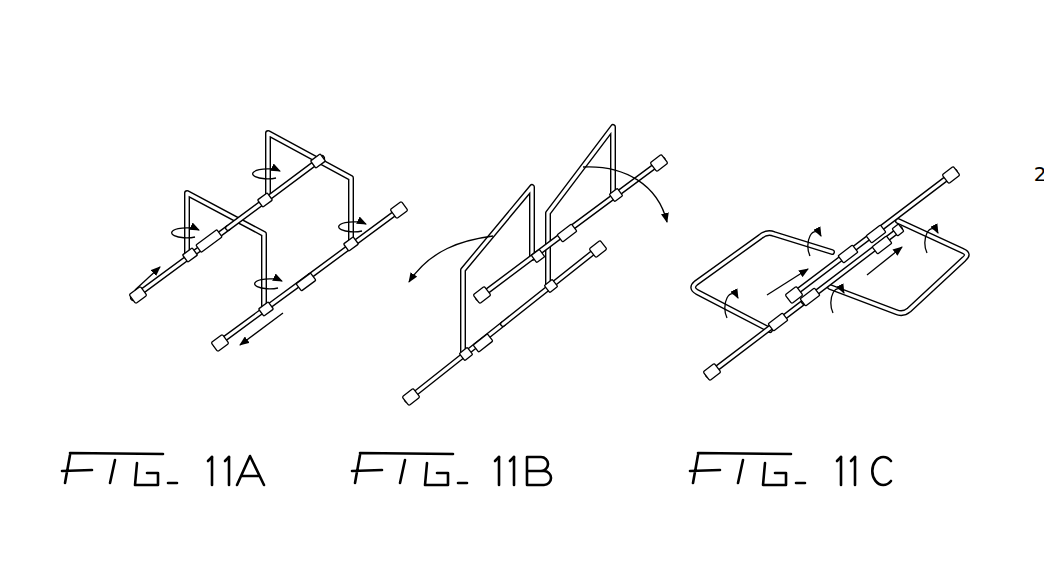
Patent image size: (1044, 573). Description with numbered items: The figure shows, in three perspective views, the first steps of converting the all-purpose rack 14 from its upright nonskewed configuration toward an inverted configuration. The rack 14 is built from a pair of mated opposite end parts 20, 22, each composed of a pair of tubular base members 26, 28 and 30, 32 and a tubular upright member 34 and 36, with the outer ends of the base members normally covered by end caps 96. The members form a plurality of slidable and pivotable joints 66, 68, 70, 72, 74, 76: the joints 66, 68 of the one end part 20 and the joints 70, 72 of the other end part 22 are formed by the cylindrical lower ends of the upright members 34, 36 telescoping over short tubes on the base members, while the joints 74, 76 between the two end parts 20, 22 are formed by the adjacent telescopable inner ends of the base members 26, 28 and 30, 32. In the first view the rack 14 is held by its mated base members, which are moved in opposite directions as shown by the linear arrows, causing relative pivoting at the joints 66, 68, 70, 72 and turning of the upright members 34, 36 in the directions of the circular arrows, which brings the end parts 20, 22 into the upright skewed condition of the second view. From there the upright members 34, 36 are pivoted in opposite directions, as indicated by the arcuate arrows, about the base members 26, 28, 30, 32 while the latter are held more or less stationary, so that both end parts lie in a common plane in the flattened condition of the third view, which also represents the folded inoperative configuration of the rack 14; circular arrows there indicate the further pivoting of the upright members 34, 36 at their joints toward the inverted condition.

In FIG. 11A, the all-purpose rack 14 is at (252, 231).
In FIG. 11B, the all-purpose rack 14 is at (564, 229).
In FIG. 11C, the all-purpose rack 14 is at (840, 239).
In FIG. 11A, the end part 20 is at (169, 227).
In FIG. 11B, the end part 20 is at (468, 247).
In FIG. 11C, the end part 20 is at (748, 250).
In FIG. 11A, the end part 22 is at (355, 178).
In FIG. 11B, the end part 22 is at (593, 178).
In FIG. 11C, the end part 22 is at (924, 284).
In FIG. 11A, the tubular base member 26 is at (242, 328).
In FIG. 11B, the tubular base member 26 is at (437, 383).
In FIG. 11C, the tubular base member 26 is at (737, 360).
In FIG. 11A, the tubular base member 28 is at (165, 288).
In FIG. 11B, the tubular base member 28 is at (511, 277).
In FIG. 11C, the tubular base member 28 is at (832, 237).
In FIG. 11A, the tubular base member 30 is at (333, 266).
In FIG. 11B, the tubular base member 30 is at (568, 278).
In FIG. 11C, the tubular base member 30 is at (855, 266).
In FIG. 11A, the tubular base member 32 is at (302, 190).
In FIG. 11B, the tubular base member 32 is at (598, 215).
In FIG. 11C, the tubular base member 32 is at (918, 200).
In FIG. 11A, the tubular upright member 34 is at (185, 190).
In FIG. 11B, the tubular upright member 34 is at (468, 262).
In FIG. 11C, the tubular upright member 34 is at (706, 305).
In FIG. 11A, the tubular upright member 36 is at (344, 167).
In FIG. 11B, the tubular upright member 36 is at (590, 152).
In FIG. 11C, the tubular upright member 36 is at (884, 312).
In FIG. 11A, the slidable and pivotable joint 66 is at (258, 303).
In FIG. 11A, the slidable and pivotable joint 68 is at (178, 248).
In FIG. 11A, the slidable and pivotable joint 70 is at (345, 240).
In FIG. 11A, the slidable and pivotable joint 72 is at (258, 189).
In FIG. 11A, the slidable and pivotable joint 74 is at (303, 295).
In FIG. 11A, the slidable and pivotable joint 76 is at (211, 258).
In FIG. 11A, the end cap 96 is at (319, 157).
In FIG. 11B, the end cap 96 is at (535, 279).
In FIG. 11C, the end cap 96 is at (870, 150).